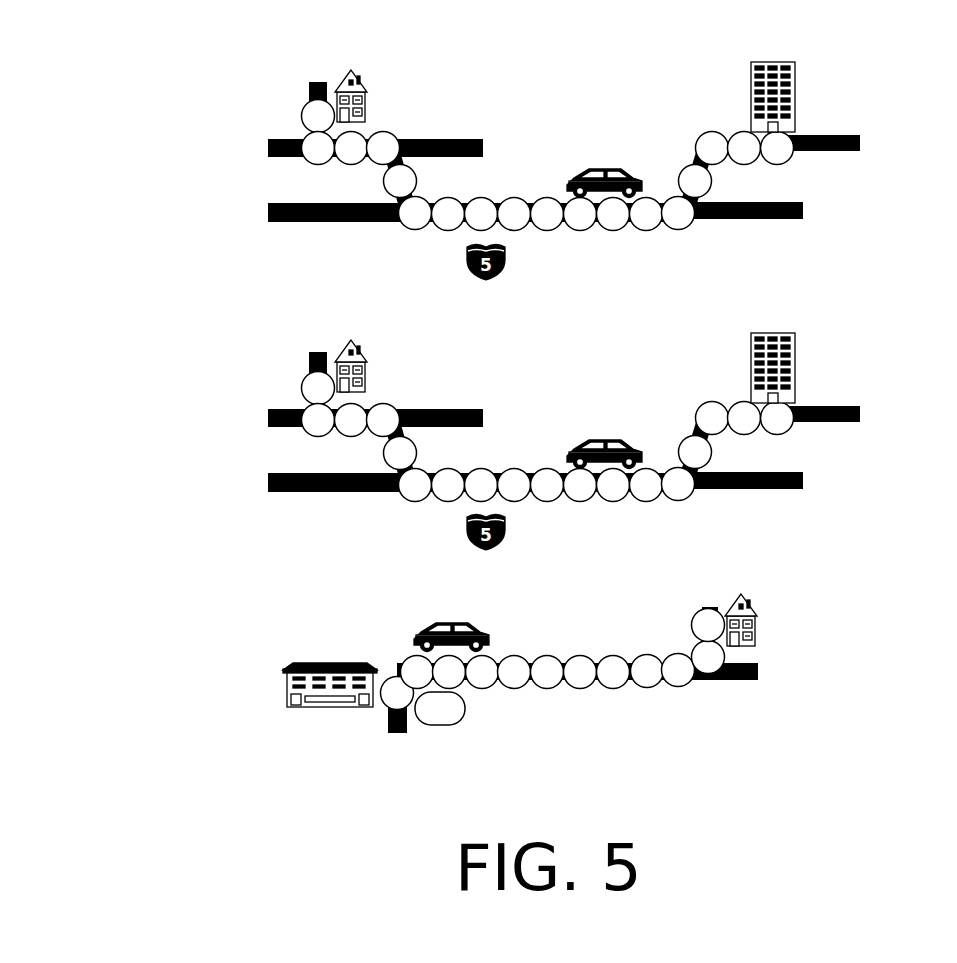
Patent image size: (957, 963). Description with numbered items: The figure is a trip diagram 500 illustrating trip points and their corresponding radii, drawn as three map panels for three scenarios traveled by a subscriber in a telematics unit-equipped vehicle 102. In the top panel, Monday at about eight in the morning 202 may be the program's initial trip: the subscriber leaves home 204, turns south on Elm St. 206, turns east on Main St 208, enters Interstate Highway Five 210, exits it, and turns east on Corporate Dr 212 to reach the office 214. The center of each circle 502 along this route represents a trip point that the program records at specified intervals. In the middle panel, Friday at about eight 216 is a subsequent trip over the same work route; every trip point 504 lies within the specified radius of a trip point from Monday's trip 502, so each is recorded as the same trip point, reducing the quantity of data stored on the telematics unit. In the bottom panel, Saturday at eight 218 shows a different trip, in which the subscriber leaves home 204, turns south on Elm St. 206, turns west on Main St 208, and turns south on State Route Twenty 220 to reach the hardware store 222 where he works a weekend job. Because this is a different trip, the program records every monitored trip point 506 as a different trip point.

The trip diagram 500 is at (633, 99).
The vehicle 102 is at (573, 165).
The Monday scenario 202 is at (178, 118).
The home 204 is at (373, 98).
The Elm St. 206 is at (308, 82).
The Main St 208 is at (443, 157).
The Interstate Highway 5 210 is at (737, 220).
The Corporate Dr 212 is at (837, 133).
The office 214 is at (800, 92).
The Friday scenario 216 is at (178, 432).
The Saturday scenario 218 is at (178, 658).
The State Route 20 220 is at (398, 733).
The hardware store 222 is at (330, 660).
The trip points of Monday's trip 502 is at (318, 165).
The trip points of Friday's trip 504 is at (320, 437).
The trip points of Saturday's trip 506 is at (647, 688).